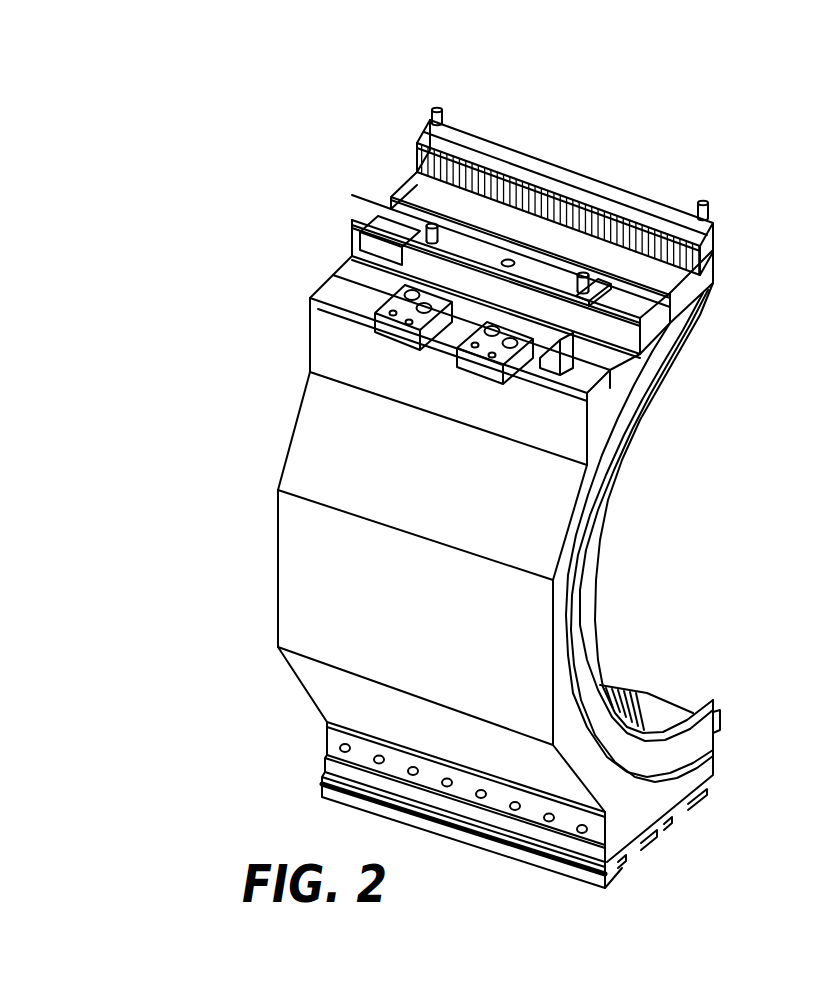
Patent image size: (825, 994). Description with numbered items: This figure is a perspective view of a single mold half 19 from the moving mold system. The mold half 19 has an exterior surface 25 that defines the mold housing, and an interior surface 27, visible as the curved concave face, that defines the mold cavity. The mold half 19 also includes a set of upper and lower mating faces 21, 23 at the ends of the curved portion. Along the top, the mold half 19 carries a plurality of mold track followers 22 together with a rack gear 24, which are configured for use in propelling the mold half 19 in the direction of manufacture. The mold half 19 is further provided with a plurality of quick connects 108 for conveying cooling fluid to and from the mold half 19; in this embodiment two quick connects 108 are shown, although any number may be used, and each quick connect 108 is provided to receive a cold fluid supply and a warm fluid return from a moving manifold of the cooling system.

The mold half 19 is at (238, 556).
The upper mating face 21 is at (716, 297).
The mold track followers 22 is at (442, 112).
The lower mating face 23 is at (714, 703).
The rack gear 24 is at (418, 166).
The exterior surface 25 is at (552, 668).
The interior surface 27 is at (596, 630).
The quick connects 108 is at (475, 352).